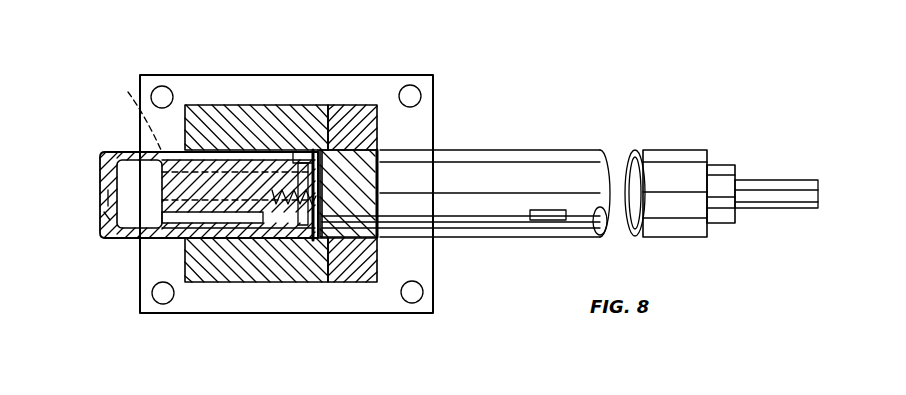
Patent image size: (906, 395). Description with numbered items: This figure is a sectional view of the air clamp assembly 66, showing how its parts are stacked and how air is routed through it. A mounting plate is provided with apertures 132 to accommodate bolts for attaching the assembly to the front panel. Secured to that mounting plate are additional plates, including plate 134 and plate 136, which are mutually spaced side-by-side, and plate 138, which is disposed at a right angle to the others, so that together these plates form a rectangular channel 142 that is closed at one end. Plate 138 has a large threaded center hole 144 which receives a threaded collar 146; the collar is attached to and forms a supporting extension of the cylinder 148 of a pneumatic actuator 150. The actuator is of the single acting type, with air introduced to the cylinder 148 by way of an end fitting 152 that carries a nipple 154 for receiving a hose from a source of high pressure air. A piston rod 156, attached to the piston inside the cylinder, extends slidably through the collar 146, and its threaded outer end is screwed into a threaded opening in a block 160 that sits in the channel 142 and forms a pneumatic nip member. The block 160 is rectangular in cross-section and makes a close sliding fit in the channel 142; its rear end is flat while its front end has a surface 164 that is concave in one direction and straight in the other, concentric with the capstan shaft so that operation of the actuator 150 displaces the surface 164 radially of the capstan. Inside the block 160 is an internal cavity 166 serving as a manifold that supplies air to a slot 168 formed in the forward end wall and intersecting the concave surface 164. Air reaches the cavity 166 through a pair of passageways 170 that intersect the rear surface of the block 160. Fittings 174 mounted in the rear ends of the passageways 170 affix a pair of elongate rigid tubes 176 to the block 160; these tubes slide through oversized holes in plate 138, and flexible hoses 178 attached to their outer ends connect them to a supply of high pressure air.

The air clamp assembly 66 is at (176, 58).
The apertures 132 is at (412, 84).
The plate 134 is at (282, 104).
The plate 136 is at (220, 284).
The plate 138 is at (388, 254).
The rectangular channel 142 is at (205, 236).
The center hole 144 is at (372, 142).
The threaded collar 146 is at (380, 182).
The cylinder 148 is at (553, 164).
The pneumatic actuator 150 is at (658, 150).
The end fitting 152 is at (722, 165).
The nipple 154 is at (786, 200).
The piston rod 156 is at (278, 284).
The block 160 is at (114, 148).
The surface 164 is at (116, 213).
The internal cavity 166 is at (128, 185).
The slot 168 is at (112, 197).
The passageways 170 is at (128, 92).
The fittings 174 is at (340, 130).
The tubes 176 is at (512, 218).
The flexible hoses 178 is at (552, 230).